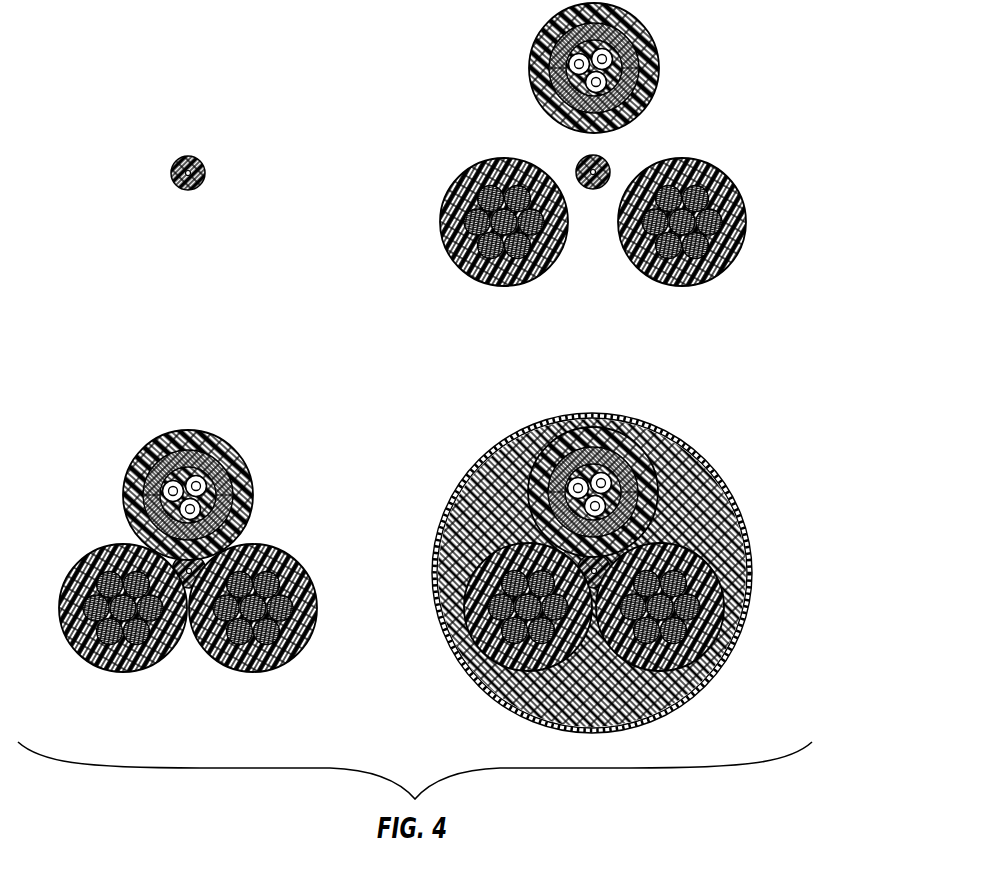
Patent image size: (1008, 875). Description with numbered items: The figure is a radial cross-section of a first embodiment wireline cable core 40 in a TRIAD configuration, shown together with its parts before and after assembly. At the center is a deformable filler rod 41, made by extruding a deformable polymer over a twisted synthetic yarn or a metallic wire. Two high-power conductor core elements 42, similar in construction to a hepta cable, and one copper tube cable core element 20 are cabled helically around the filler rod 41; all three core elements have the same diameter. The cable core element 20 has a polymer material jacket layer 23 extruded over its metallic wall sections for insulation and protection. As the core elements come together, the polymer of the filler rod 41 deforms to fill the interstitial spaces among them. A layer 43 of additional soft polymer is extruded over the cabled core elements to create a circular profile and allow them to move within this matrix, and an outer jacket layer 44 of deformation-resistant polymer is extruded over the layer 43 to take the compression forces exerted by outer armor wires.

The cable core element 20 is at (388, 280).
The polymer material jacket layer 23 is at (138, 468).
The cable core 40 is at (616, 559).
The filler rod 41 is at (204, 166).
The high-power conductor core element 42 is at (455, 175).
The layer 43 is at (718, 507).
The outer jacket layer 44 is at (588, 414).